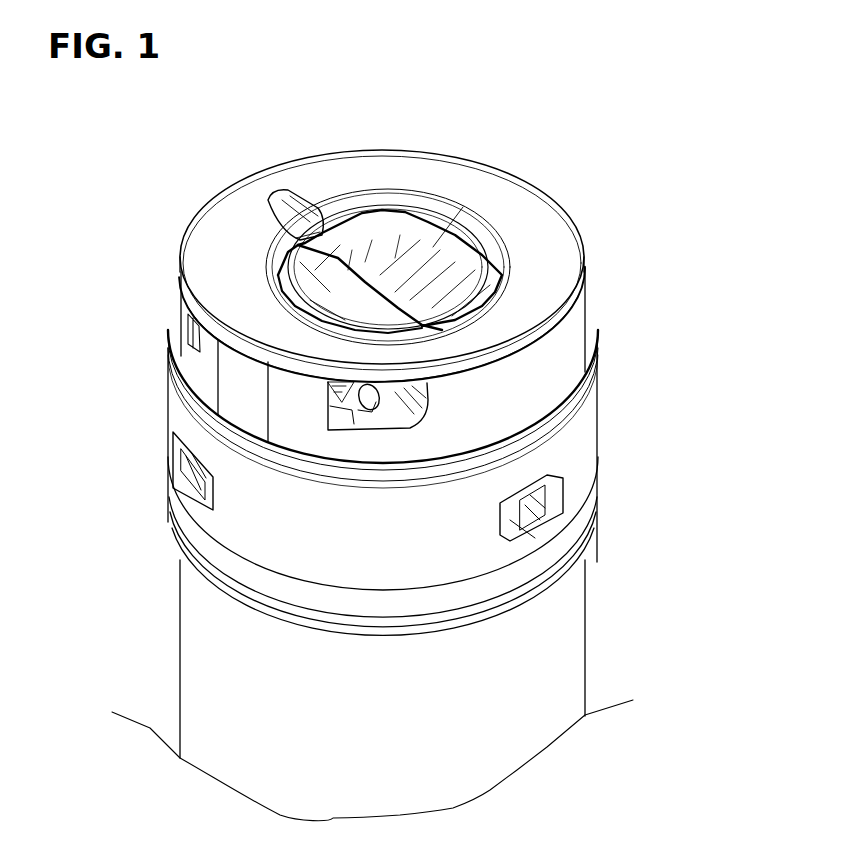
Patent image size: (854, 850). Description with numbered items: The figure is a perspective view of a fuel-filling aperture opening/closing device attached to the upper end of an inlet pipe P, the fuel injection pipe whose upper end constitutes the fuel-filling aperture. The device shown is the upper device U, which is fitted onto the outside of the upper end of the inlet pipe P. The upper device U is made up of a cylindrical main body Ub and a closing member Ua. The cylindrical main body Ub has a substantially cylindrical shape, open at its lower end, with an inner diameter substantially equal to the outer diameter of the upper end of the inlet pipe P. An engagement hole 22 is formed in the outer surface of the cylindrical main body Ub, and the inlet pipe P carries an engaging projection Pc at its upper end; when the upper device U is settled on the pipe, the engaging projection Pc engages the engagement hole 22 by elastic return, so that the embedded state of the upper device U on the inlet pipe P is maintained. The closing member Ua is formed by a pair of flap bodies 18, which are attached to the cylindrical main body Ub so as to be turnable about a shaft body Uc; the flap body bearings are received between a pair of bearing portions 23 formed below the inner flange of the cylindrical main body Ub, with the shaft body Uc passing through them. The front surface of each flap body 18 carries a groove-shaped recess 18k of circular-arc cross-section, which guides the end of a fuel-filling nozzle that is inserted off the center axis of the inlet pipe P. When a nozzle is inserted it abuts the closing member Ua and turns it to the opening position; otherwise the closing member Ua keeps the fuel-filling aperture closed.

The flap body 18 is at (381, 232).
The groove-shaped recess 18k is at (465, 208).
The upper device U is at (568, 233).
The closing member Ua is at (403, 242).
The cylindrical main body Ub is at (540, 364).
The shaft body Uc is at (389, 405).
The bearing portion 23 is at (182, 333).
The engaging projection Pc is at (193, 475).
The engagement hole 22 is at (203, 492).
The inlet pipe P is at (190, 633).